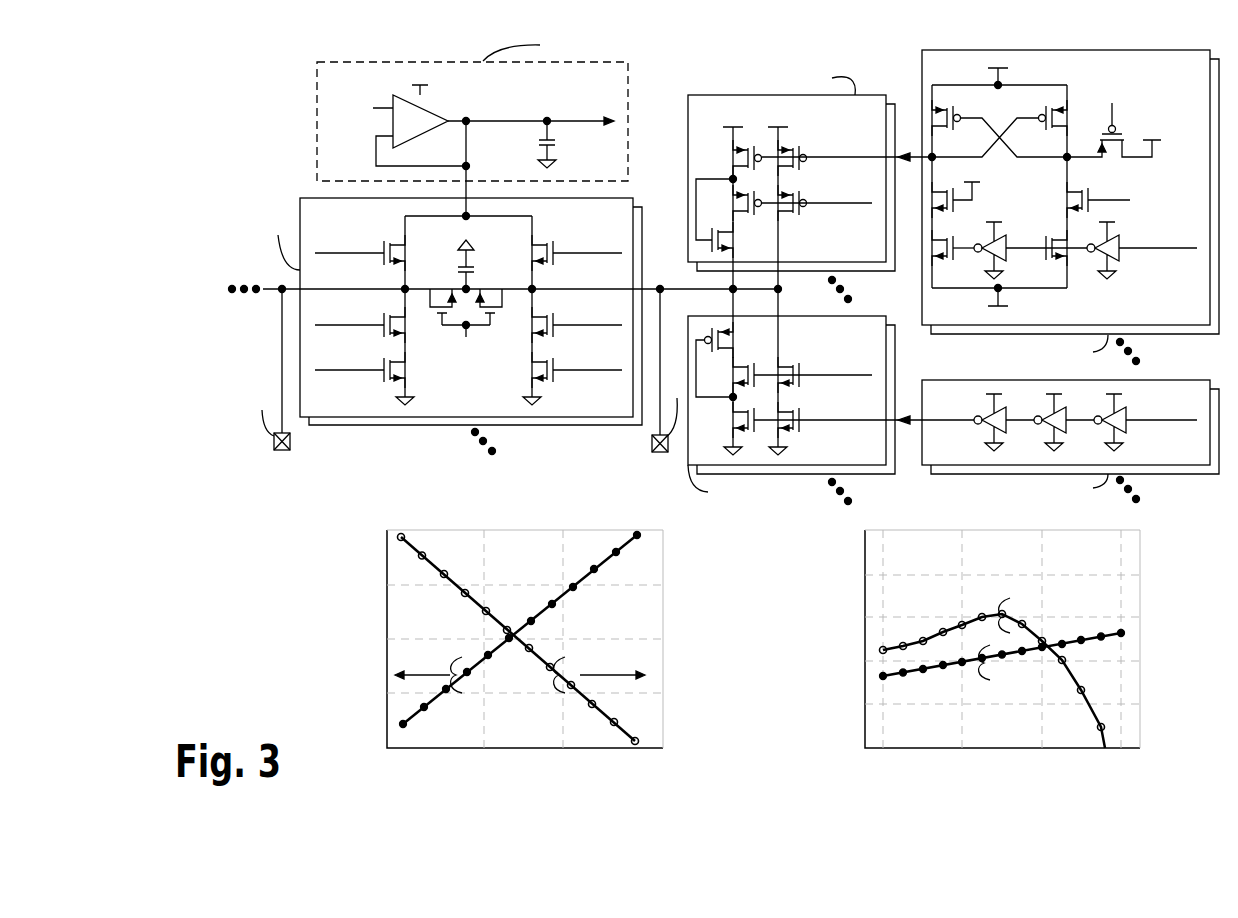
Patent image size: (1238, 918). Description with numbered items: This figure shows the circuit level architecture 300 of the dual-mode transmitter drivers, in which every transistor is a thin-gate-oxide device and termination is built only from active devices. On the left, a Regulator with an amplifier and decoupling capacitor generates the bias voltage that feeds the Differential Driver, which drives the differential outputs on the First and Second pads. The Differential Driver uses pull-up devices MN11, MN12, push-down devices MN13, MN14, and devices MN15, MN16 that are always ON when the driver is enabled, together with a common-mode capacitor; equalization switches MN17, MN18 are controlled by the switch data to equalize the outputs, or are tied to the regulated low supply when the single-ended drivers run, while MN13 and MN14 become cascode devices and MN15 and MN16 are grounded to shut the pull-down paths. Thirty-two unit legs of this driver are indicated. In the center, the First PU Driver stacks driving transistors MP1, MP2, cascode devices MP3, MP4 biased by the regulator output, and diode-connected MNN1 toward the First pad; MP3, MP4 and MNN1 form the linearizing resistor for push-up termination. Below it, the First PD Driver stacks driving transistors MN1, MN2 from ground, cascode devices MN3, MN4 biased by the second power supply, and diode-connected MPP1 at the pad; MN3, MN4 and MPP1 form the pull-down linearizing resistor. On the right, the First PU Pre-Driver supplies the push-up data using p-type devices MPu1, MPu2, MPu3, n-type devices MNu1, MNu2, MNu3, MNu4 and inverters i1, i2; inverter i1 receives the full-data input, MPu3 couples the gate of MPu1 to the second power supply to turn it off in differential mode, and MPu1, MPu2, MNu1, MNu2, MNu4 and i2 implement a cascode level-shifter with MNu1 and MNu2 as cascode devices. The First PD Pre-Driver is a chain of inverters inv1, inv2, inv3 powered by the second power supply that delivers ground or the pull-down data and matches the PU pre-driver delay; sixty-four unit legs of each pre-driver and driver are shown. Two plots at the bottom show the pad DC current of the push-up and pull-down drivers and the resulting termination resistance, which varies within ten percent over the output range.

The circuit level architecture 300 is at (219, 64).
The pull-up device MN11 is at (562, 253).
The pull-up device MN12 is at (368, 253).
The push-down device MN13 is at (562, 325).
The push-down device MN14 is at (369, 325).
The always-on device MN15 is at (562, 370).
The always-on device MN16 is at (369, 370).
The equalization switch MN17 is at (495, 298).
The equalization switch MN18 is at (431, 298).
The driving transistor MP1 is at (737, 158).
The driving transistor MP2 is at (792, 154).
The cascode device MP3 is at (737, 203).
The cascode device MP4 is at (794, 210).
The diode connected transistor MNN1 is at (725, 218).
The diode connected transistor MPP1 is at (724, 359).
The driving transistor MN1 is at (733, 420).
The driving transistor MN2 is at (795, 425).
The cascode device MN3 is at (733, 375).
The cascode device MN4 is at (792, 370).
The p-type device MPu1 is at (949, 113).
The p-type device MPu2 is at (1042, 113).
The p-type device MPu3 is at (1114, 141).
The cascode device MNu1 is at (961, 201).
The cascode device MNu2 is at (1084, 200).
The n-type device MNu3 is at (953, 254).
The n-type device MNu4 is at (1046, 254).
The inverter i1 is at (1111, 250).
The inverter i2 is at (990, 250).
The inverter inv1 is at (1124, 422).
The inverter inv2 is at (1065, 422).
The inverter inv3 is at (1006, 422).